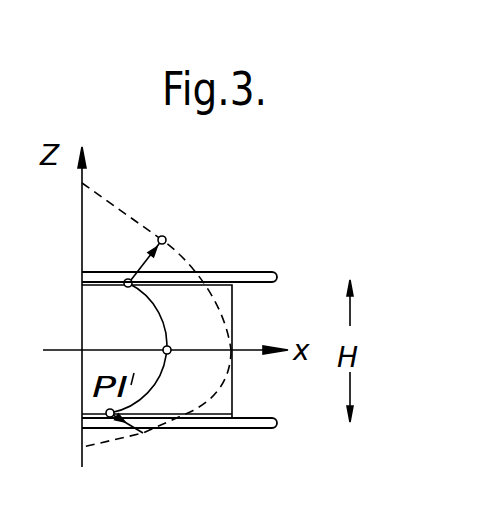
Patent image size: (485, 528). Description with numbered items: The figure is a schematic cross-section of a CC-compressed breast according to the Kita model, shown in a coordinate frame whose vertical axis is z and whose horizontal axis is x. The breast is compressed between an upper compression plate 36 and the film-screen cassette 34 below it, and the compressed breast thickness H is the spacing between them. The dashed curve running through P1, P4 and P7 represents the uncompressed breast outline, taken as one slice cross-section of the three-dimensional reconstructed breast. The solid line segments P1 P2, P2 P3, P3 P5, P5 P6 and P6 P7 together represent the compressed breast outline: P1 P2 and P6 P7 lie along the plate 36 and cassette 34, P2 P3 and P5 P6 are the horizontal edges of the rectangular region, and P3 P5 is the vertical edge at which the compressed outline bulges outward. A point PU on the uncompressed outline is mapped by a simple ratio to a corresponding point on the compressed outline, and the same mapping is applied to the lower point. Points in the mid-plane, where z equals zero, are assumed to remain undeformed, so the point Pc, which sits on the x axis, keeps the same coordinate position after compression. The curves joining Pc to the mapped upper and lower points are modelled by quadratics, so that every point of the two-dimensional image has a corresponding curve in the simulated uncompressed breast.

The upper compression plate 36 is at (264, 272).
The film-screen cassette 34 is at (277, 425).
The point P1 is at (156, 303).
The point P2 is at (82, 282).
The point P3 is at (183, 317).
The point P4 is at (252, 368).
The point P5 is at (255, 403).
The point P6 is at (133, 422).
The point P7 is at (157, 424).
The point Pu PU is at (140, 245).
The point Pc is at (160, 348).